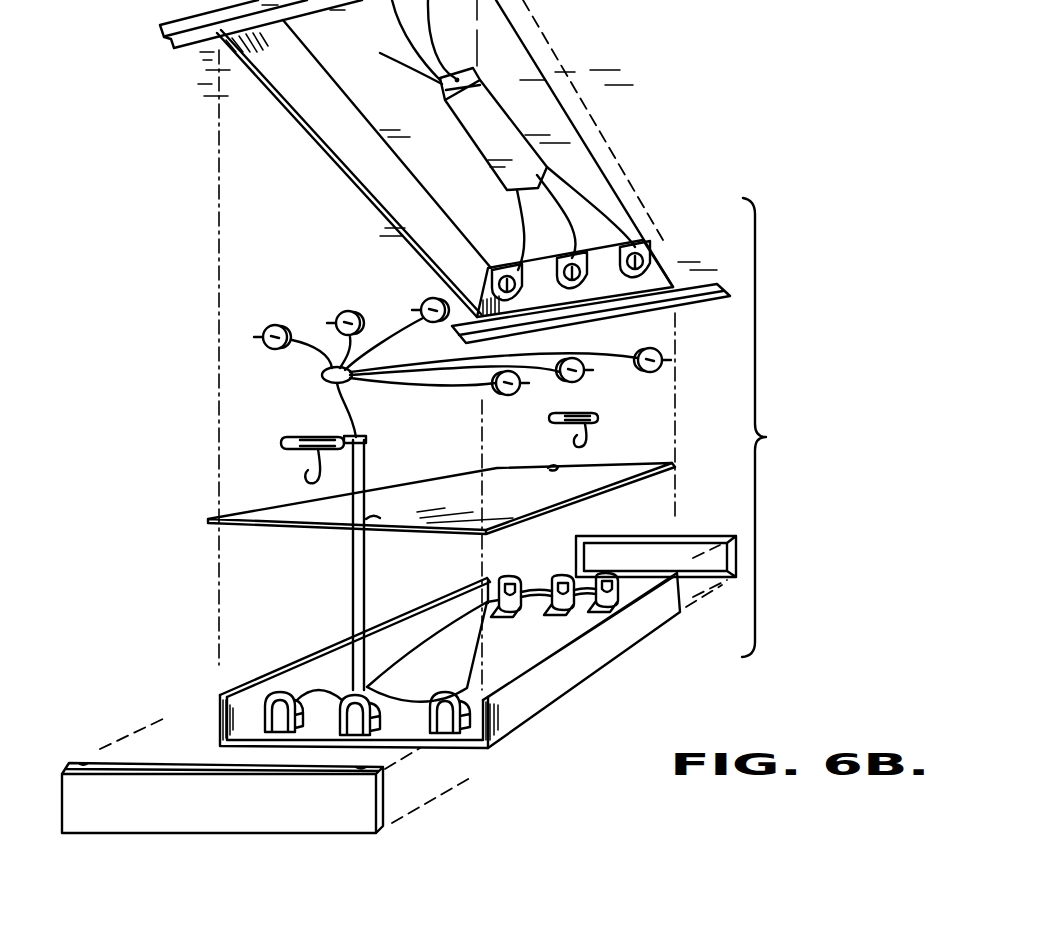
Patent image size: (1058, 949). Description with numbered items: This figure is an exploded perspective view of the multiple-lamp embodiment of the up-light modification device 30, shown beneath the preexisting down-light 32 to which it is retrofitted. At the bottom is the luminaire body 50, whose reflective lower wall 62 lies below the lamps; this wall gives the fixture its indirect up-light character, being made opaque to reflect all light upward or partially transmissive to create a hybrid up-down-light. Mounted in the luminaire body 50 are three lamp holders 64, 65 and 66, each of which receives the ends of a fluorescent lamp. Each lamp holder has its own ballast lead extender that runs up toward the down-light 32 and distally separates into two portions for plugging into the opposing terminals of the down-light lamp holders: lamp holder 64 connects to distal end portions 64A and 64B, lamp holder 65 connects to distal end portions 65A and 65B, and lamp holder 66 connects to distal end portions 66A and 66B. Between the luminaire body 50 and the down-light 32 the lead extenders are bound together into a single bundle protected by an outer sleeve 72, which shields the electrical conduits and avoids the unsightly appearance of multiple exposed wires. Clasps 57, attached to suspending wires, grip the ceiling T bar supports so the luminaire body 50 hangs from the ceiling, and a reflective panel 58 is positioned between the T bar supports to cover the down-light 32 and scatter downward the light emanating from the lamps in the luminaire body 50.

The up-light modification device 30 is at (157, 680).
The down-light 32 is at (621, 137).
The luminaire body 50 is at (612, 648).
The clasp 57 is at (283, 443).
The reflective panel 58 is at (647, 463).
The reflective lower wall 62 is at (528, 645).
The lamp holder 64 is at (443, 733).
The lamp holder 65 is at (343, 702).
The lamp holder 66 is at (272, 692).
The ballast lead extender distal end portion 64A is at (428, 302).
The ballast lead extender distal end portion 65A is at (345, 306).
The ballast lead extender distal end portion 66A is at (270, 321).
The ballast lead extender distal end portion 64B is at (663, 348).
The ballast lead extender distal end portion 65B is at (580, 380).
The ballast lead extender distal end portion 66B is at (495, 395).
The outer sleeve 72 is at (366, 568).